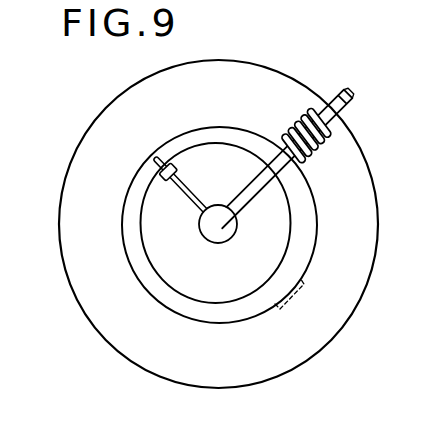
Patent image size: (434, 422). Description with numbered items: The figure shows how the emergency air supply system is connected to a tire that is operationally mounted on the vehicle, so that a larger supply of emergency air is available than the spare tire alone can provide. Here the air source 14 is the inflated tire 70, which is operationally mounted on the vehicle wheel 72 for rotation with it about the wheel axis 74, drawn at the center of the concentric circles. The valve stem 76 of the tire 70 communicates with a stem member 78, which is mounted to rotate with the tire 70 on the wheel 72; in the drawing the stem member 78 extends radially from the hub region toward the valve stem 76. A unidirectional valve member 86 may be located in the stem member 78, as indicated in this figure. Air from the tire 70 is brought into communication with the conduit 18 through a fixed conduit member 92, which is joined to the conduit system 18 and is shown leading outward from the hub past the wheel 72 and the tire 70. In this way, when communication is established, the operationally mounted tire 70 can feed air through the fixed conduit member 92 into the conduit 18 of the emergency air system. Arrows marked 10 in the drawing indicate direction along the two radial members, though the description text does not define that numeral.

The air source 14 is at (190, 203).
The inflated tire 70 is at (70, 192).
The vehicle wheel 72 is at (215, 132).
The fixed conduit member 92 is at (278, 189).
The wheel axis 74 is at (219, 223).
The conduit 18 is at (349, 113).
The stem member 78 is at (193, 193).
The unidirectional valve member 86 is at (163, 179).
The valve stem 76 is at (153, 162).
The direction of movement arrows 10 is at (184, 201).